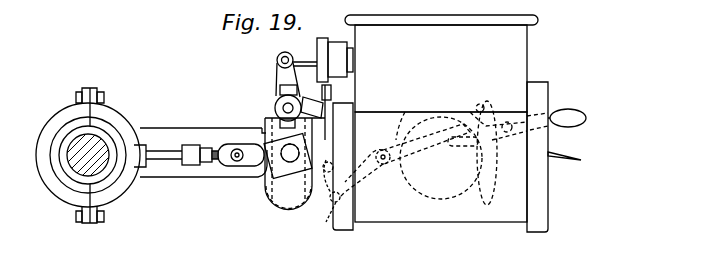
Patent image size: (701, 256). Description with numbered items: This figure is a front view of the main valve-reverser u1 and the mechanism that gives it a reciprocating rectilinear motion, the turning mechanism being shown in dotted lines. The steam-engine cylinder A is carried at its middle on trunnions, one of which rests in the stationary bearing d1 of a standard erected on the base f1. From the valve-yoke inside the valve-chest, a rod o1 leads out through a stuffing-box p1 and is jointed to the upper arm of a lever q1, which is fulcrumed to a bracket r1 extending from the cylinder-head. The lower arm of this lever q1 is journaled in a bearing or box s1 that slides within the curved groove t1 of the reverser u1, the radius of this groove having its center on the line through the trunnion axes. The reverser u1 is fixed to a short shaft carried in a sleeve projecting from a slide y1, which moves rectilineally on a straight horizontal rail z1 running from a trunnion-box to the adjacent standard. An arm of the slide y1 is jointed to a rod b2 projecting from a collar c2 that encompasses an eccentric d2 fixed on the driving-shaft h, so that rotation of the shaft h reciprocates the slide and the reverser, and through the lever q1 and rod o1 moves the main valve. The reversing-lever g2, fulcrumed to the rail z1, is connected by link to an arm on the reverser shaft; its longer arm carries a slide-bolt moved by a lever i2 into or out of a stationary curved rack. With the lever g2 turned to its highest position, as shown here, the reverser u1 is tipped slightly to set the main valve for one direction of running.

The driving-shaft h is at (88, 156).
The eccentric d2 is at (88, 155).
The collar c2 is at (136, 146).
The rod b2 is at (192, 152).
The rail z1 is at (186, 143).
The bearing d1 is at (241, 155).
The slide y1 is at (288, 147).
The curved groove t1 is at (288, 197).
The bearing or box s1 is at (288, 160).
The bracket r1 is at (299, 106).
The lever q1 is at (288, 80).
The rod o1 is at (297, 56).
The stuffing-box p1 is at (335, 69).
The main valve-reverser u1 is at (325, 187).
The base f1 is at (354, 193).
The tank E is at (441, 63).
The steam-engine cylinder A is at (451, 157).
The reversing-lever g2 is at (567, 118).
The lever i2 is at (564, 151).